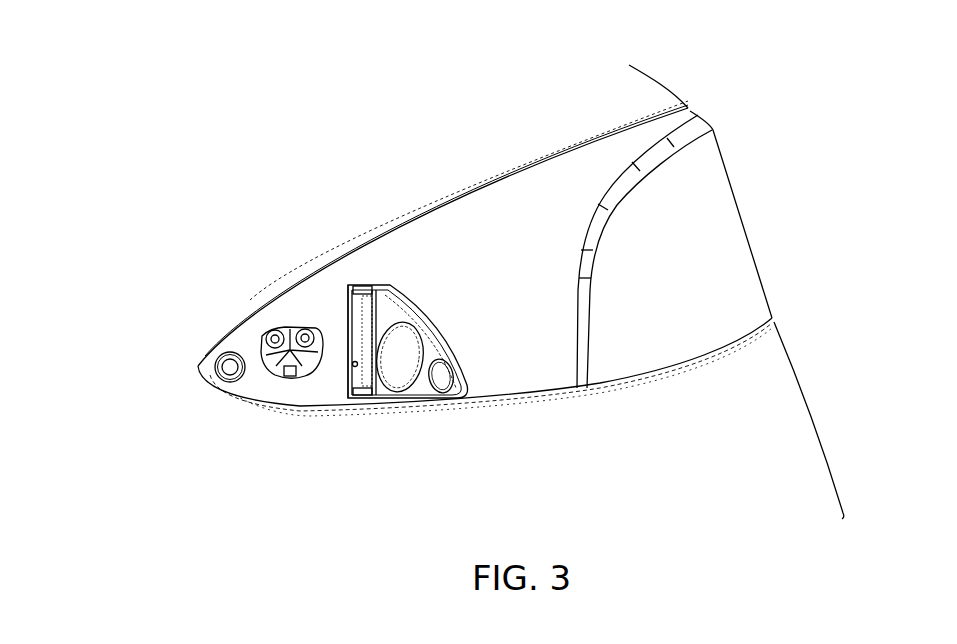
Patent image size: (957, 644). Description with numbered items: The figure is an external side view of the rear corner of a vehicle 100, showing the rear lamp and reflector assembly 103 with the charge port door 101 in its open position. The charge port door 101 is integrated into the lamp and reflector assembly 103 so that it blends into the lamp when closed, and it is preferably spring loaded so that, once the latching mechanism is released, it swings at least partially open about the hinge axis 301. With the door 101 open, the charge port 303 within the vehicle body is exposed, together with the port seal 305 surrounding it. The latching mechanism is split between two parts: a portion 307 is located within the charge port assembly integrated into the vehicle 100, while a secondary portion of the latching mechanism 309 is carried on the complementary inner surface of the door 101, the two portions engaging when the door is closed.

The vehicle 100 is at (138, 281).
The charge port door 101 is at (425, 303).
The rear vehicle lamp and reflector assembly 103 is at (633, 283).
The hinge axis 301 is at (351, 372).
The charge port 303 is at (275, 352).
The port seal 305 is at (395, 352).
The portion of the latching mechanism 307 is at (227, 368).
The secondary portion of the latching mechanism 309 is at (442, 377).